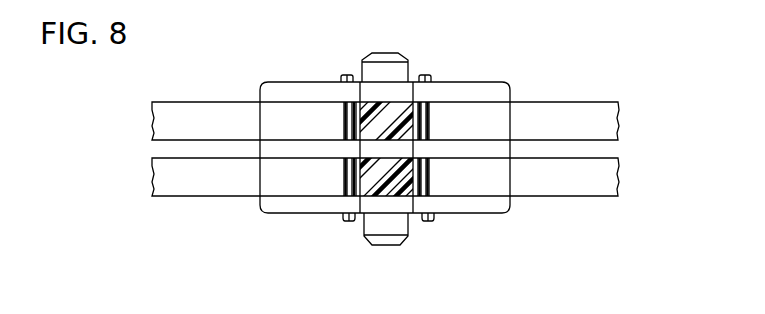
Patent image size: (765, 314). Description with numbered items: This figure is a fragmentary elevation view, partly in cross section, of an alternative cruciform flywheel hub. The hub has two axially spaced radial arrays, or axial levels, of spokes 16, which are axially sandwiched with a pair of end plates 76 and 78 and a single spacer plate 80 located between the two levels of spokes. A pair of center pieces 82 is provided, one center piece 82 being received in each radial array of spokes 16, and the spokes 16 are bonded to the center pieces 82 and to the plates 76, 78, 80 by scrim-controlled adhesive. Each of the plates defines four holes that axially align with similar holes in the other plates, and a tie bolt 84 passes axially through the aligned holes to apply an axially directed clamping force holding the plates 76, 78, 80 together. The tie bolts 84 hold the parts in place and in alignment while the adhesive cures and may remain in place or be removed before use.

The spokes 16 is at (190, 112).
The end plate 76 is at (497, 93).
The end plate 78 is at (490, 203).
The spacer plate 80 is at (497, 150).
The center piece 82 is at (345, 186).
The tie bolt 84 is at (430, 118).